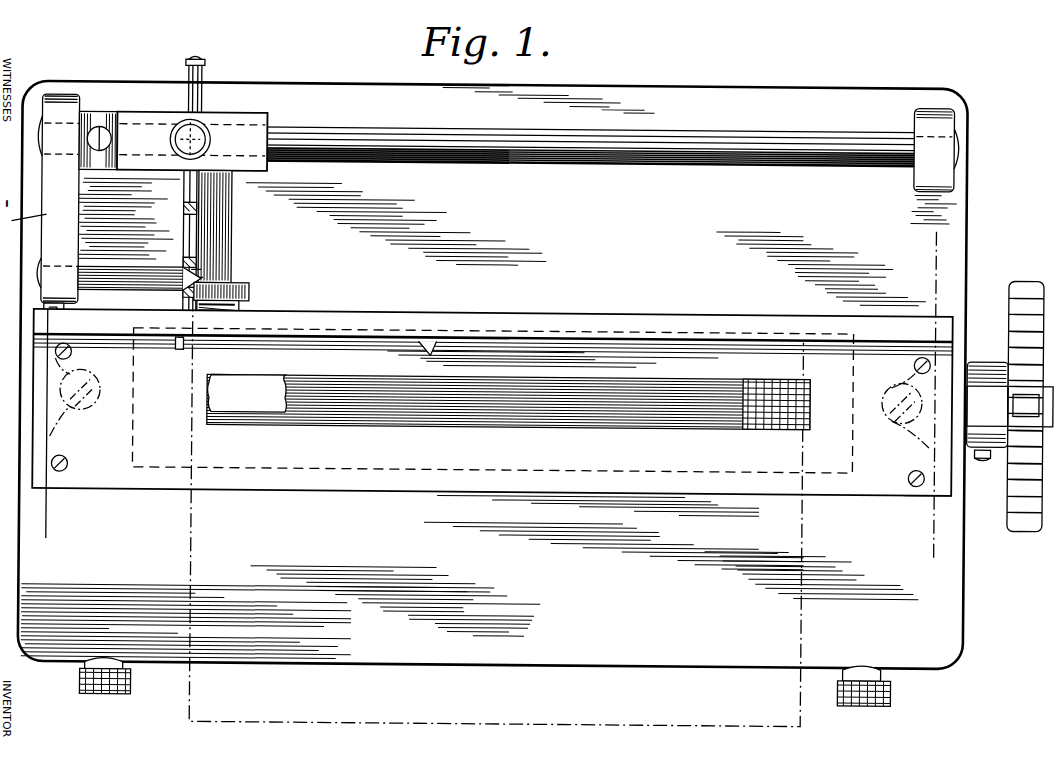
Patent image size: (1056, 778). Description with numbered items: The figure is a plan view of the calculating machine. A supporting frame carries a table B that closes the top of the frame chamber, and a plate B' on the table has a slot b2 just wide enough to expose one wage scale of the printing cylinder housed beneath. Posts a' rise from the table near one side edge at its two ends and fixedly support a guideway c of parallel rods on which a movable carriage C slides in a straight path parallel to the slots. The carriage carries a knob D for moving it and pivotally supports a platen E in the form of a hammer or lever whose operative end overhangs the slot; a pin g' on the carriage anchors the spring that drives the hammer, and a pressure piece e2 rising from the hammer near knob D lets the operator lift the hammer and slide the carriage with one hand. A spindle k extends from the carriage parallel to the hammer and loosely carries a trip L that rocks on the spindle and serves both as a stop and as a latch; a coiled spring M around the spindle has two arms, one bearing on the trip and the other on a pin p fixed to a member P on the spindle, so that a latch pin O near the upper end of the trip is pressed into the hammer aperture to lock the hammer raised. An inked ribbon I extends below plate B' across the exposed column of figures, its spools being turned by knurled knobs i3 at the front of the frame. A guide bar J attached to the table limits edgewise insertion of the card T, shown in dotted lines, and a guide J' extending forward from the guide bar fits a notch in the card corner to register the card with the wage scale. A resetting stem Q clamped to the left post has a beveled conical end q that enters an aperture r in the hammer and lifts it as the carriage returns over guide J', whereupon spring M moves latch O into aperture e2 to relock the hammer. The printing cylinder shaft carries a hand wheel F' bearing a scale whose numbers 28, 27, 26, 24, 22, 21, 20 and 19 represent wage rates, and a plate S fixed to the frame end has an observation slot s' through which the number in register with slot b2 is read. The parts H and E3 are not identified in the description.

The table B is at (493, 375).
The plate B' is at (903, 509).
The carriage C is at (245, 125).
The knob D is at (176, 128).
The platen E is at (181, 227).
The pointer E3 is at (432, 352).
The operating member F' is at (1011, 402).
The index scale H is at (278, 412).
The ribbon I is at (572, 405).
The guide bar J is at (492, 409).
The guide J' is at (492, 400).
The trip L is at (238, 362).
The coiled spring M is at (240, 318).
The latch O is at (180, 346).
The member P is at (240, 287).
The resetting stem Q is at (90, 272).
The plate S is at (988, 370).
The card T is at (192, 550).
The post a' is at (961, 148).
The slot b2 is at (755, 425).
The guideway c is at (672, 163).
The pressure piece e2 is at (183, 210).
The pin g' is at (217, 70).
The knurled knob i3 is at (128, 697).
The spindle k is at (230, 213).
The pin p is at (240, 328).
The beveled conical end q is at (200, 282).
The aperture r is at (193, 270).
The observation slot s' is at (946, 411).
The scale graduation 28 is at (1025, 340).
The scale graduation 27 is at (1025, 356).
The scale graduation 26 is at (1025, 373).
The scale graduation 24 is at (1026, 405).
The scale graduation 22 is at (1025, 438).
The scale graduation 21 is at (1024, 455).
The scale graduation 20 is at (1024, 471).
The scale graduation 19 is at (1024, 487).